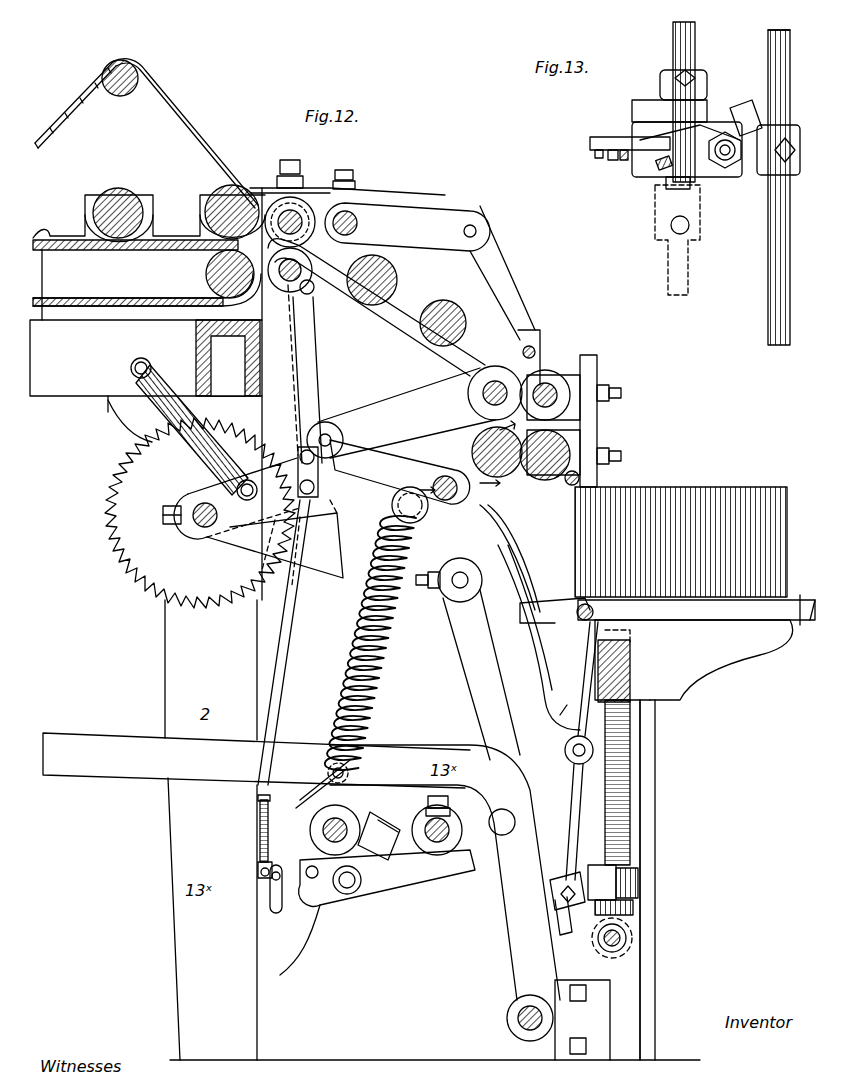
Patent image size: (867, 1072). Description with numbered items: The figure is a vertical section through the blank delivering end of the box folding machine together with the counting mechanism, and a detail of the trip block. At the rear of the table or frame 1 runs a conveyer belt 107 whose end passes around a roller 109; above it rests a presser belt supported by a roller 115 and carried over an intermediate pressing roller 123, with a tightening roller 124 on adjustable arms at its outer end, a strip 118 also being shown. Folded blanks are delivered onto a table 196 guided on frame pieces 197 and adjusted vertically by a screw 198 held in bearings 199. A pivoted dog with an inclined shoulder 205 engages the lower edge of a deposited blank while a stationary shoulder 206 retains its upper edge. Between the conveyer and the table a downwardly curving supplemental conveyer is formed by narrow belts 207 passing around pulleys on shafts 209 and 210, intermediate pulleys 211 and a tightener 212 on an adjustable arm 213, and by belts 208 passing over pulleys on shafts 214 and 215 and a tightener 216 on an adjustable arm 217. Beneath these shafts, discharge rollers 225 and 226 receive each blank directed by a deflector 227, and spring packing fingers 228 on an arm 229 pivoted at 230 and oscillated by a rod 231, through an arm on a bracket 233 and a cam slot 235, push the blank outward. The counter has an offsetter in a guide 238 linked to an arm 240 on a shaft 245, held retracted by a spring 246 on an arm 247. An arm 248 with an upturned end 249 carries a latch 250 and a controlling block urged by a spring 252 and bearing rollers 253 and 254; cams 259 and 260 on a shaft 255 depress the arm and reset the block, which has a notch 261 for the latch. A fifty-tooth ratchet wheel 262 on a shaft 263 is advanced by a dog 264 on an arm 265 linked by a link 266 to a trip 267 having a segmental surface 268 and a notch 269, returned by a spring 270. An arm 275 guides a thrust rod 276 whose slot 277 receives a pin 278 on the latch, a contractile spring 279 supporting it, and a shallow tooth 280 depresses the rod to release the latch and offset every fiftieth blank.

In FIG. 12, the table or frame 1 is at (365, 655).
In FIG. 12, the belt 107 is at (100, 250).
In FIG. 12, the roller 109 is at (210, 282).
In FIG. 12, the roller 115 is at (222, 215).
In FIG. 12, the feed strip 118 is at (196, 114).
In FIG. 12, the pressing roller 123 is at (118, 200).
In FIG. 12, the roller 124 is at (120, 96).
In FIG. 12, the table 196 is at (696, 623).
In FIG. 12, the frame pieces 197 is at (645, 798).
In FIG. 12, the screw 198 is at (625, 758).
In FIG. 12, the bearings 199 is at (640, 876).
In FIG. 12, the inclined shoulder 205 is at (580, 603).
In FIG. 12, the stationary shoulder 206 is at (572, 486).
In FIG. 12, the belts 207 is at (418, 283).
In FIG. 12, the belts 208 is at (512, 276).
In FIG. 12, the shaft 209 is at (302, 270).
In FIG. 12, the shaft 210 is at (486, 392).
In FIG. 12, the intermediate pulleys 211 is at (435, 335).
In FIG. 12, the tightener 212 is at (322, 422).
In FIG. 12, the adjustable arm 213 is at (433, 482).
In FIG. 12, the shaft 214 is at (295, 222).
In FIG. 12, the shaft 215 is at (555, 395).
In FIG. 12, the tightener 216 is at (474, 203).
In FIG. 12, the adjustable arm 217 is at (407, 227).
In FIG. 12, the discharge roller 225 is at (473, 452).
In FIG. 12, the discharge roller 226 is at (545, 478).
In FIG. 12, the deflector 227 is at (532, 372).
In FIG. 12, the spring packing fingers 228 is at (505, 558).
In FIG. 12, the arm 229 is at (468, 659).
In FIG. 12, the pivot 230 is at (520, 1025).
In FIG. 12, the rod 231 is at (256, 760).
In FIG. 12, the bracket 233 is at (576, 679).
In FIG. 12, the cam slot 235 is at (575, 788).
In FIG. 12, the guide 238 is at (612, 626).
In FIG. 12, the arm 240 is at (553, 868).
In FIG. 12, the shaft 245 is at (625, 972).
In FIG. 13, the shaft 245 is at (775, 303).
In FIG. 12, the spring 246 is at (378, 698).
In FIG. 12, the arm 247 is at (410, 758).
In FIG. 12, the arm 248 is at (400, 890).
In FIG. 13, the arm 248 is at (740, 168).
In FIG. 12, the upwardly extending end 249 is at (310, 908).
In FIG. 13, the upwardly extending end 249 is at (636, 132).
In FIG. 12, the latch 250 is at (300, 906).
In FIG. 13, the latch 250 is at (596, 135).
In FIG. 12, the spring 252 is at (382, 843).
In FIG. 12, the pin or roller 253 is at (338, 884).
In FIG. 13, the pin or roller 253 is at (690, 188).
In FIG. 13, the pin or roller 254 is at (740, 113).
In FIG. 12, the shaft 255 is at (330, 818).
In FIG. 13, the shaft 255 is at (700, 102).
In FIG. 12, the cam 259 is at (332, 831).
In FIG. 13, the cam 259 is at (650, 198).
In FIG. 13, the cam 260 is at (645, 108).
In FIG. 12, the notch 261 is at (345, 898).
In FIG. 13, the notch 261 is at (655, 165).
In FIG. 12, the ratchet wheel 262 is at (200, 504).
In FIG. 12, the shaft 263 is at (200, 503).
In FIG. 12, the pawl or dog 264 is at (318, 491).
In FIG. 12, the arm 265 is at (263, 496).
In FIG. 12, the link 266 is at (315, 378).
In FIG. 12, the trip 267 is at (366, 296).
In FIG. 12, the segmental surface 268 is at (345, 222).
In FIG. 12, the notch 269 is at (298, 262).
In FIG. 12, the spring 270 is at (140, 418).
In FIG. 12, the arm 275 is at (237, 502).
In FIG. 12, the thrust rod 276 is at (306, 623).
In FIG. 13, the thrust rod 276 is at (610, 158).
In FIG. 12, the slot 277 is at (268, 908).
In FIG. 12, the pin 278 is at (270, 885).
In FIG. 12, the contractile spring 279 is at (260, 816).
In FIG. 12, the shallow tooth 280 is at (275, 542).